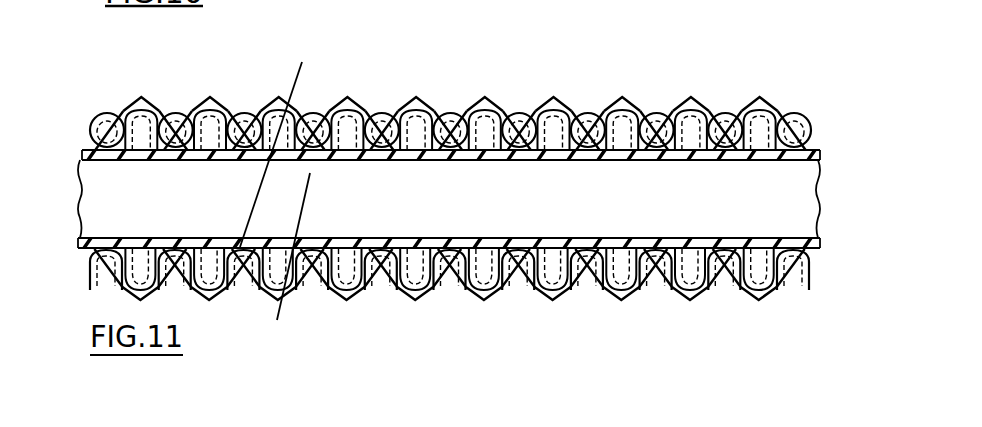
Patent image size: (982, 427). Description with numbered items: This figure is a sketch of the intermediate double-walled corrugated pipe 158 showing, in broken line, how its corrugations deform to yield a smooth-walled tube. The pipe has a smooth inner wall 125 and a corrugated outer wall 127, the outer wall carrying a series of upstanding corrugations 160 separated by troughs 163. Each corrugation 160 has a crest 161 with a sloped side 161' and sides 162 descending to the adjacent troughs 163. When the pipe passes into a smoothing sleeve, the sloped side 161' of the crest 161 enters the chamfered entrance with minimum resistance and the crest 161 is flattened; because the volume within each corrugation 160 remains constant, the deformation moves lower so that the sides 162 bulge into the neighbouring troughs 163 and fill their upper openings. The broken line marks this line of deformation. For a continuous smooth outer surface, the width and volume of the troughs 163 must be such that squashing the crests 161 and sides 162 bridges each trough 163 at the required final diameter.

The smooth inner wall 125 is at (162, 158).
The outer wall 127 is at (602, 108).
The intermediate corrugated pipe 158 is at (566, 90).
The corrugation 160 is at (430, 107).
The crest 161 is at (450, 178).
The sloped side 161' is at (450, 255).
The side 162 is at (140, 108).
The trough 163 is at (281, 191).